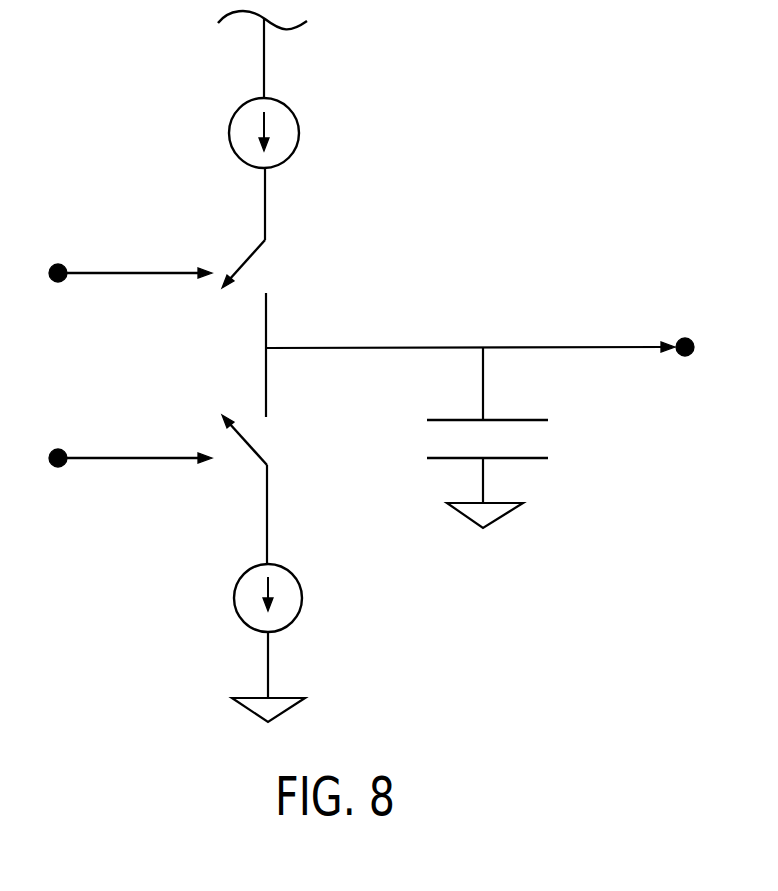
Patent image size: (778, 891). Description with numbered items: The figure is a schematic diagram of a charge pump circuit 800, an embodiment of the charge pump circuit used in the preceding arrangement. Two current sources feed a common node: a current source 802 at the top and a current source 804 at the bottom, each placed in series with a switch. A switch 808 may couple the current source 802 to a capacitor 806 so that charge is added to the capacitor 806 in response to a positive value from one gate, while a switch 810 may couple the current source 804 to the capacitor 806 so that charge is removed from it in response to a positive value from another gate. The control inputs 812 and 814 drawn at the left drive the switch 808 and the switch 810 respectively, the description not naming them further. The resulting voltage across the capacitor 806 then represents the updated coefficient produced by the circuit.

The charge pump circuit 800 is at (552, 92).
The current source 802 is at (296, 110).
The current source 804 is at (298, 614).
The capacitor 806 is at (557, 445).
The switch 808 is at (276, 266).
The switch 810 is at (272, 443).
The up control signal input 812 is at (61, 262).
The down control signal input 814 is at (62, 447).